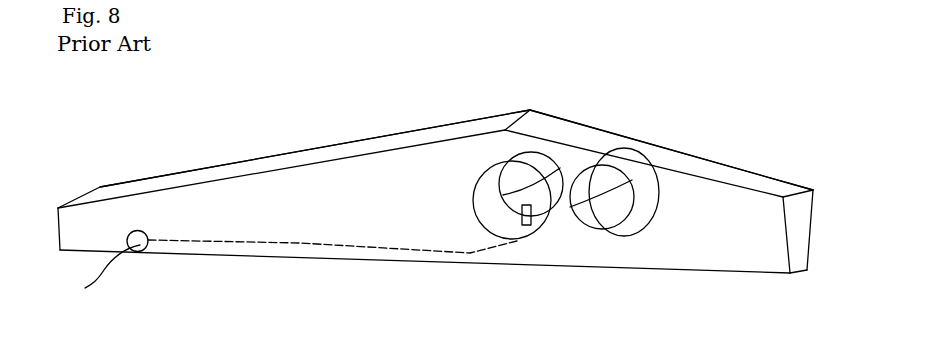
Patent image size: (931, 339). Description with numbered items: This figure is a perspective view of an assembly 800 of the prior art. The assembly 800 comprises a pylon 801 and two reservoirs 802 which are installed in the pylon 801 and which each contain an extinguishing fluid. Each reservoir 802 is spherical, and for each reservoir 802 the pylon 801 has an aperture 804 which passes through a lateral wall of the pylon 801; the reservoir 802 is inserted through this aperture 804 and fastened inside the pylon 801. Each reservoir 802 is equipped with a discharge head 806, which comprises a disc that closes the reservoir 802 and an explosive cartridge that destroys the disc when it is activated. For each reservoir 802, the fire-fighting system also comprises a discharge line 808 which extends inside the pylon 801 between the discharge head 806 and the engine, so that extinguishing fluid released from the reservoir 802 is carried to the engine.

The assembly 800 is at (700, 127).
The pylon 801 is at (215, 198).
The reservoir 802 is at (510, 177).
The aperture 804 is at (525, 226).
The discharge head 806 is at (531, 215).
The discharge line 808 is at (275, 243).